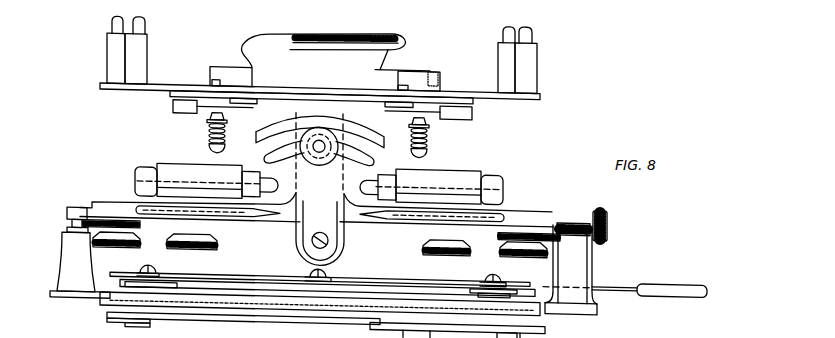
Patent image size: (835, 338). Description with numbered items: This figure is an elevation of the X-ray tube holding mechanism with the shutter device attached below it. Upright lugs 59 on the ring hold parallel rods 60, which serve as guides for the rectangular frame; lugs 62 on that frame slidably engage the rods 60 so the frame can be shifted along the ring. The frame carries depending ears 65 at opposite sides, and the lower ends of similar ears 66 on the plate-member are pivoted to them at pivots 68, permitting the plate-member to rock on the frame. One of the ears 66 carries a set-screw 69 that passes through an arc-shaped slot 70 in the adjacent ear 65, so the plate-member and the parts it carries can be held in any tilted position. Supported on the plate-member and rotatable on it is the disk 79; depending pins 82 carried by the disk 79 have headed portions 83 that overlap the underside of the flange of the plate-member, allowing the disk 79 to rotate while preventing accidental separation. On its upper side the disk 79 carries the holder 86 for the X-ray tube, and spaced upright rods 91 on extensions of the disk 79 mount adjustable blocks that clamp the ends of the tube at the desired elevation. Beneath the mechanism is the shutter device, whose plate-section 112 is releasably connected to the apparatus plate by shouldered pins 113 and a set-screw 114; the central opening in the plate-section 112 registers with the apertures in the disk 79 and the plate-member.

The upright rods 91 is at (137, 18).
The holder 86 is at (371, 28).
The disk 79 is at (187, 82).
The depending pins 82 is at (232, 99).
The headed portions 83 is at (242, 101).
The set-screw 69 is at (257, 133).
The arc-shaped slot 70 is at (364, 152).
The parallel rods 60 is at (176, 176).
The lugs 62 is at (251, 179).
The lugs 59 is at (148, 198).
The depending ears 65 is at (308, 214).
The pivots 68 is at (312, 240).
The ears 66 is at (345, 244).
The shouldered pins 113 is at (67, 224).
The plate-section 112 is at (93, 297).
The set-screw 114 is at (607, 226).